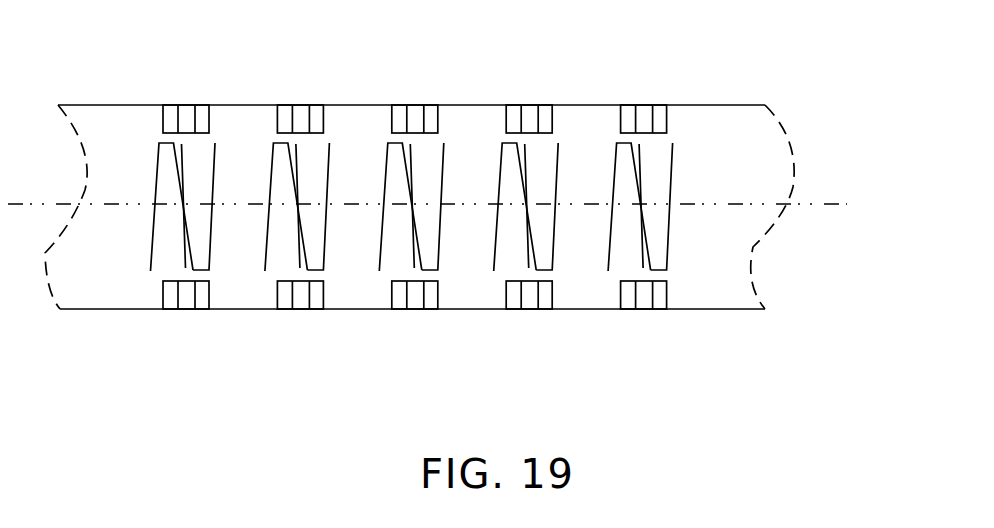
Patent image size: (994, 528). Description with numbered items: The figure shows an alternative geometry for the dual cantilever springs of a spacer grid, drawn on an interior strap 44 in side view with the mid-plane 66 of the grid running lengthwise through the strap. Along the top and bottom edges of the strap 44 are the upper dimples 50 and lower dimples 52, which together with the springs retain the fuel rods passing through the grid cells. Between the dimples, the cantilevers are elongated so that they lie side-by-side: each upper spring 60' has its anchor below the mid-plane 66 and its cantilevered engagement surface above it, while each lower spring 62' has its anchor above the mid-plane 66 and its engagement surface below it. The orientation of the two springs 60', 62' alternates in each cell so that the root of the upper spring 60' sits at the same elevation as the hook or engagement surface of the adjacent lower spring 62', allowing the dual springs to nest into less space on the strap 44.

The interior strap 44 is at (98, 310).
The upper dimples 50 is at (302, 105).
The lower dimples 52 is at (306, 310).
The upper springs 60' is at (370, 157).
The lower springs 62' is at (433, 153).
The mid-plane 66 is at (810, 203).